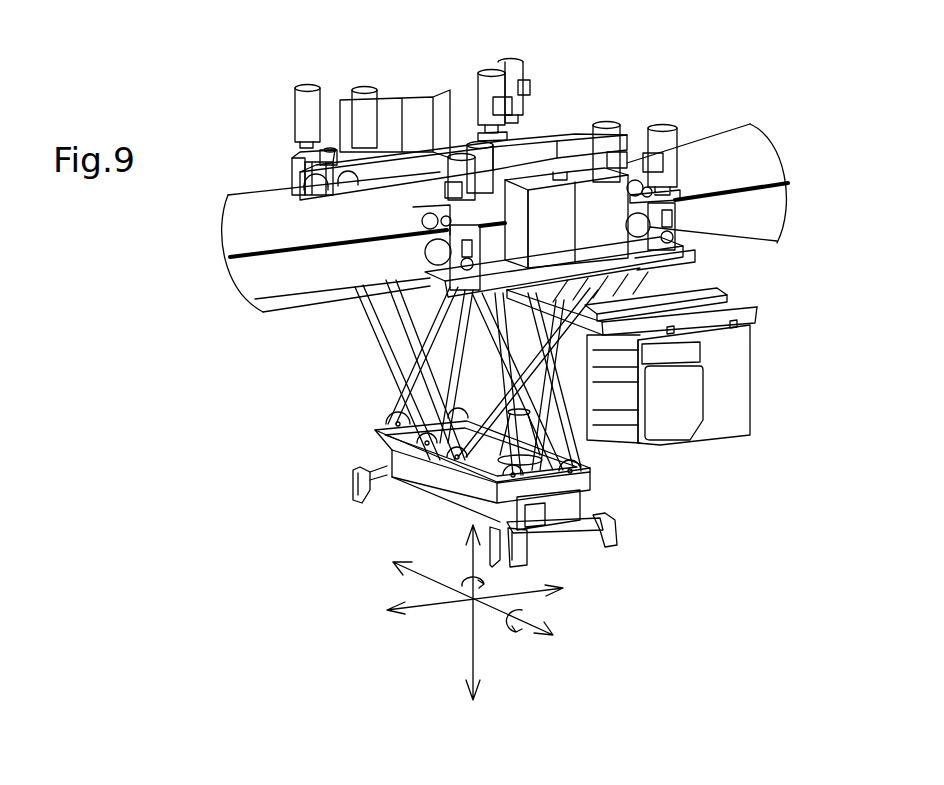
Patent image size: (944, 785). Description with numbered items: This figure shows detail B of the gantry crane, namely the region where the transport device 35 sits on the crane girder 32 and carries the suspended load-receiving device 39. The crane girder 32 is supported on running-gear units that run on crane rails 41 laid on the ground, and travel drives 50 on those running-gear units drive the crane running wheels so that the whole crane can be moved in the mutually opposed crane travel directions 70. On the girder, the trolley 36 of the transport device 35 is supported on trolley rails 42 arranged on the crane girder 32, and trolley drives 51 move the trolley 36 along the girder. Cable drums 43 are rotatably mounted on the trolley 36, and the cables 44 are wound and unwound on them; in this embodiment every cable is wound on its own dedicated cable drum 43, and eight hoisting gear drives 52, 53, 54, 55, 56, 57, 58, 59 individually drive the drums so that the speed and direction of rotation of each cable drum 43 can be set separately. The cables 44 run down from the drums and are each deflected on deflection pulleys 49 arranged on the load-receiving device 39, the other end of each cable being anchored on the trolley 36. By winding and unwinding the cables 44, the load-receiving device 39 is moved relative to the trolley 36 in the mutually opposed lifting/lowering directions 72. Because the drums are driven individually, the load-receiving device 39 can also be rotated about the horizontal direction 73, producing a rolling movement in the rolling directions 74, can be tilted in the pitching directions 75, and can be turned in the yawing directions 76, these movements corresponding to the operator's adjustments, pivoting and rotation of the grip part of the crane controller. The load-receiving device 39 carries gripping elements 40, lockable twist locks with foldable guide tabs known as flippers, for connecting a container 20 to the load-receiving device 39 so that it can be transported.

The container 20 is at (735, 380).
The crane girder 32 is at (745, 150).
The transport device 35 is at (592, 82).
The trolley 36 is at (390, 173).
The load-receiving device 39 is at (567, 503).
The gripping elements 40 is at (344, 497).
The crane rails 41 is at (342, 0).
The trolley rails 42 is at (300, 257).
The cable drums 43 is at (322, 193).
The cables 44 is at (557, 337).
The deflection pulleys 49 is at (388, 432).
The travel drives 50 is at (232, 15).
The trolley drives 51 is at (337, 167).
The hoisting gear drive 52 is at (318, 100).
The hoisting gear drive 53 is at (368, 105).
The hoisting gear drive 54 is at (488, 88).
The hoisting gear drive 55 is at (515, 75).
The hoisting gear drive 56 is at (670, 145).
The hoisting gear drive 57 is at (608, 140).
The hoisting gear drive 58 is at (486, 165).
The hoisting gear drive 59 is at (465, 170).
The crane travel directions 70 is at (647, 13).
The lifting/lowering directions 72 is at (475, 655).
The horizontal direction 73 is at (523, 617).
The rolling directions 74 is at (516, 628).
The pitching directions 75 is at (432, 618).
The yawing directions 76 is at (547, 565).